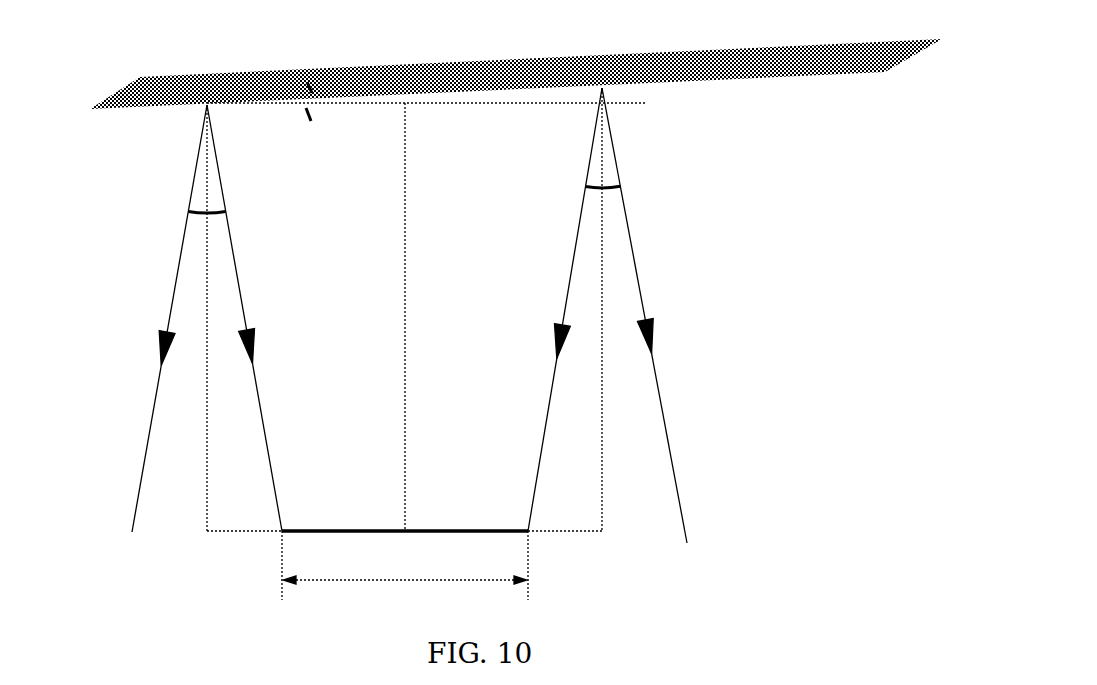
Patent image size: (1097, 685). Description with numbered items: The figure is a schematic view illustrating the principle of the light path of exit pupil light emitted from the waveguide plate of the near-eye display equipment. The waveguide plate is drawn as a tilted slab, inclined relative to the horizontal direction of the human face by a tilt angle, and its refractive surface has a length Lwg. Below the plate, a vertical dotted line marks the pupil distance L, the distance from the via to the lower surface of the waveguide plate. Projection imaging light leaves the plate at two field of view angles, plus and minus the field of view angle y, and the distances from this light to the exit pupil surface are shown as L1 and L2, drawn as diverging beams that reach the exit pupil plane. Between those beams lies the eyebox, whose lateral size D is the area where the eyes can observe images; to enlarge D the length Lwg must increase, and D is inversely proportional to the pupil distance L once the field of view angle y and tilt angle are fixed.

The length of the waveguide plate Lwg is at (516, 71).
The distance from projection imaging light at field of view angle −y to the exit pup L1 is at (152, 318).
The distance from projection imaging light at field of view angle +y to the exit pup L2 is at (657, 315).
The pupil distance L is at (419, 317).
The lateral size of the eyebox D is at (405, 557).
The field of view angle y is at (585, 178).